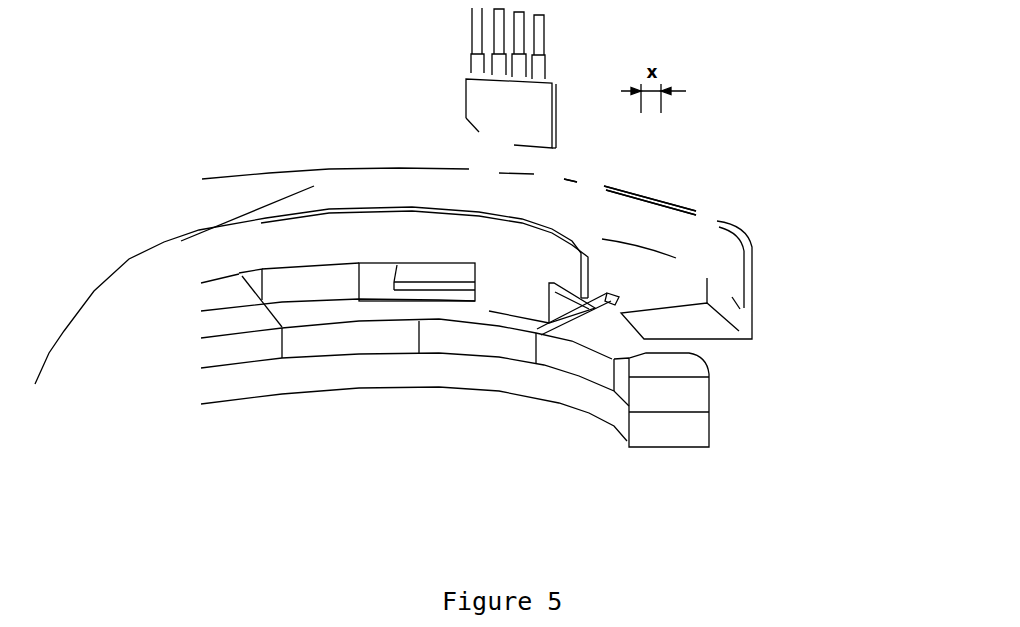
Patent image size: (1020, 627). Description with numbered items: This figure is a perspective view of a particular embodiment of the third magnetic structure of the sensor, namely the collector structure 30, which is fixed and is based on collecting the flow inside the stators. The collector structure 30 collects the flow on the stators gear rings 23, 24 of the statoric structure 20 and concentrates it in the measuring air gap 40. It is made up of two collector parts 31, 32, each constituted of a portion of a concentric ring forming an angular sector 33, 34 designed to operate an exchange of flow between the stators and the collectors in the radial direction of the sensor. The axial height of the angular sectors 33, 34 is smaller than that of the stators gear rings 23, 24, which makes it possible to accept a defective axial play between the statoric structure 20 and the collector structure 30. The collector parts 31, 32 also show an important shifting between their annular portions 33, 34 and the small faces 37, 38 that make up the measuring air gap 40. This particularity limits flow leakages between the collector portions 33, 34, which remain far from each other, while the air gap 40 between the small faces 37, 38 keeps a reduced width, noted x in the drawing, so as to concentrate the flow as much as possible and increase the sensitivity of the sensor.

The statoric structure 20 is at (239, 166).
The stators gear ring 23 is at (310, 304).
The stators gear ring 24 is at (435, 242).
The collector structure 30 is at (456, 151).
The collector part 31 is at (735, 298).
The collector part 32 is at (610, 290).
The angular sector 33 is at (693, 252).
The angular sector 34 is at (595, 275).
The small face 37 is at (665, 150).
The small face 38 is at (637, 148).
The measuring air gap 40 is at (655, 138).